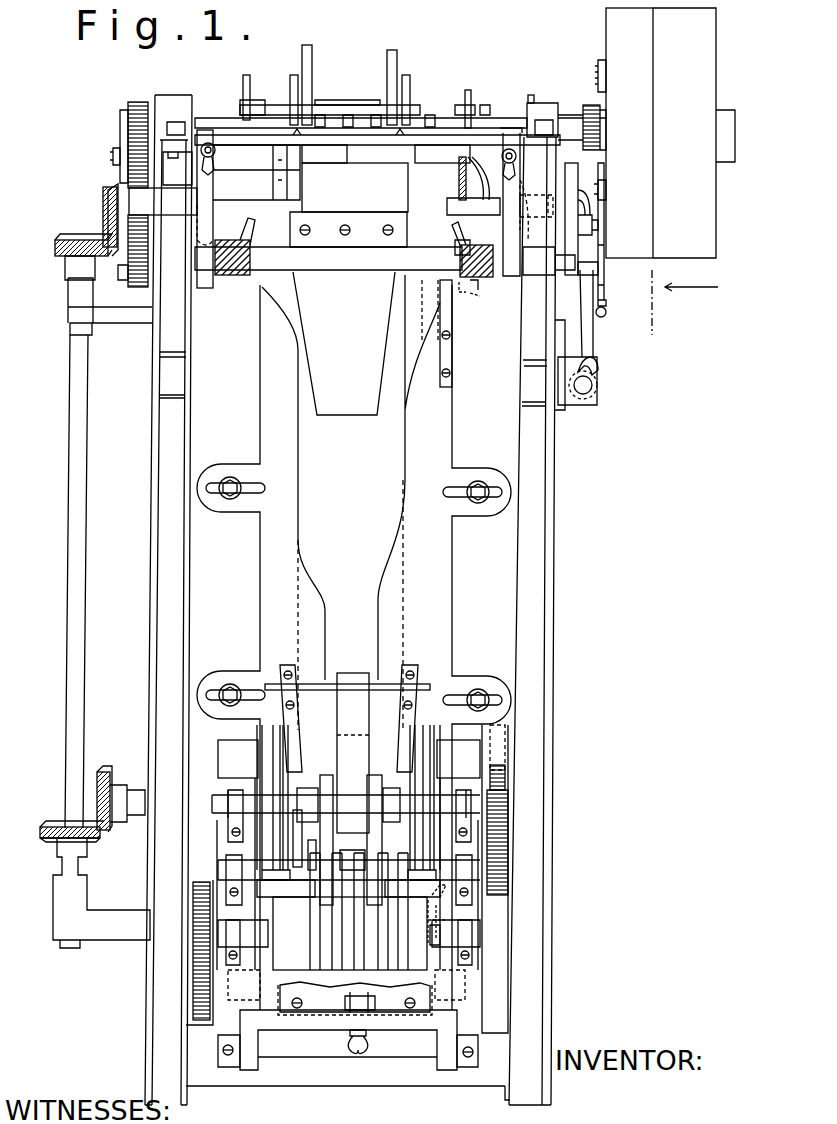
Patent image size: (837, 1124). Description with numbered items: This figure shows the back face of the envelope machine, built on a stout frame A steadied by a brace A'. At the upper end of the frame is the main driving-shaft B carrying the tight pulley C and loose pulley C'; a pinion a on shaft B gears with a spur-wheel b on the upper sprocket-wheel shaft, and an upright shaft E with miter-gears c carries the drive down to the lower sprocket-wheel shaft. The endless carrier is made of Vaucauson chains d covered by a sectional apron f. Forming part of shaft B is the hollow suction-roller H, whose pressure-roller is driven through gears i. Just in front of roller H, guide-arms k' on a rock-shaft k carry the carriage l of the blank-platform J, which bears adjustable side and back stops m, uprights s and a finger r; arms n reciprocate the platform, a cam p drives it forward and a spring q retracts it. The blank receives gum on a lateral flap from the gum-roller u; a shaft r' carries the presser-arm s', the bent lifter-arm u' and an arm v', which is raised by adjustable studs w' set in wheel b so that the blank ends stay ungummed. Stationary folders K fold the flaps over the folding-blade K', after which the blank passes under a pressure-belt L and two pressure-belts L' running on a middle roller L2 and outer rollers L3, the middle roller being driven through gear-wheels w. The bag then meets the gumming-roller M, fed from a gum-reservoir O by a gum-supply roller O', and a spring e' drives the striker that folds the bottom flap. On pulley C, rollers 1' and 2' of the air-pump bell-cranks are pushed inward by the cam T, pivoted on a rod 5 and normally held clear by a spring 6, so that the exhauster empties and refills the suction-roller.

The frame A is at (328, 600).
The brace A' is at (531, 604).
The upright shaft E is at (66, 585).
The miter-gears c is at (104, 206).
The pinion a is at (141, 103).
The spur-wheel b is at (127, 180).
The arm v' is at (114, 146).
The adjustable studs w' is at (111, 224).
The guide-arms k' is at (181, 168).
The carriage l is at (215, 152).
The arms n is at (213, 186).
The endless chains d is at (272, 172).
The side and back stops m is at (252, 97).
The adjustable uprights s is at (350, 85).
The plate or finger r is at (365, 108).
The main driving-shaft B is at (490, 120).
The blank-platform J is at (327, 140).
The suction-roller H is at (386, 178).
The shaft r' is at (334, 227).
The gum-reservoir O is at (328, 631).
The gum-supply roller O' is at (443, 627).
The spring q is at (236, 270).
The gum-roller u is at (474, 293).
The lifter-arm u' is at (500, 181).
The presser-arm s' is at (455, 200).
The rock-shaft k is at (509, 159).
The cam p is at (428, 290).
The cam T is at (604, 228).
The tight pulley C is at (629, 133).
The loose pulley C' is at (694, 133).
The roller 1' is at (593, 70).
The gears i is at (600, 136).
The roller 2' is at (609, 188).
The rod 5 is at (585, 410).
The spring 6 is at (595, 368).
The stationary folders K is at (351, 502).
The stationary folding-blade K' is at (344, 388).
The pressure-belt L is at (353, 753).
The pressure-belts L' is at (349, 785).
The middle roller L2 is at (372, 778).
The outer rollers L3 is at (345, 684).
The apron f is at (310, 849).
The gear-wheels w is at (363, 892).
The gumming-roller M is at (350, 911).
The spring e' is at (440, 915).